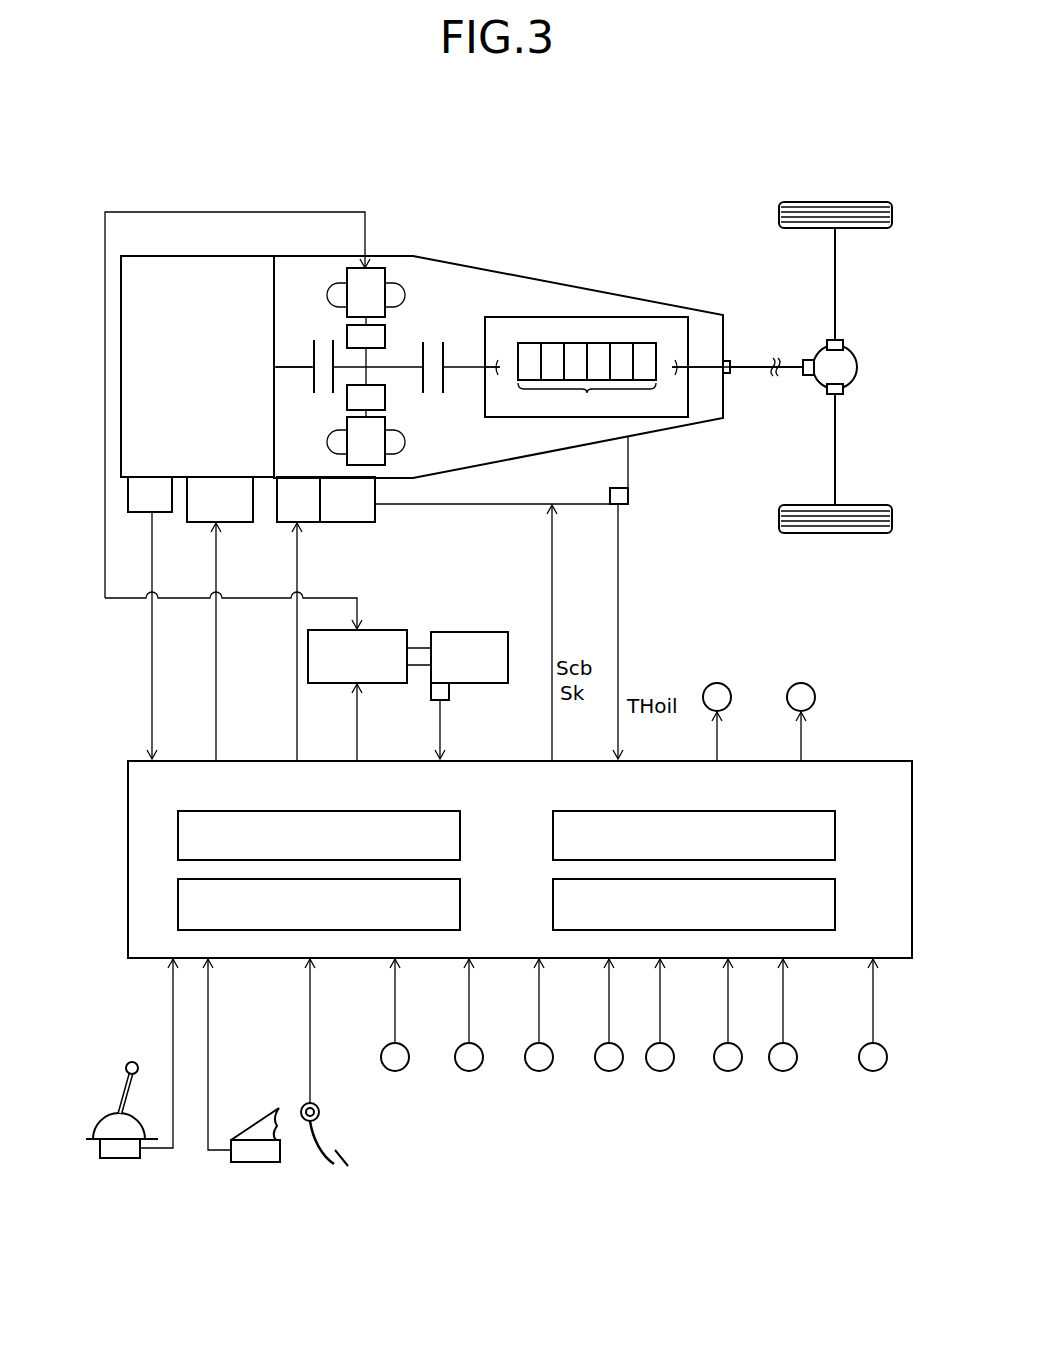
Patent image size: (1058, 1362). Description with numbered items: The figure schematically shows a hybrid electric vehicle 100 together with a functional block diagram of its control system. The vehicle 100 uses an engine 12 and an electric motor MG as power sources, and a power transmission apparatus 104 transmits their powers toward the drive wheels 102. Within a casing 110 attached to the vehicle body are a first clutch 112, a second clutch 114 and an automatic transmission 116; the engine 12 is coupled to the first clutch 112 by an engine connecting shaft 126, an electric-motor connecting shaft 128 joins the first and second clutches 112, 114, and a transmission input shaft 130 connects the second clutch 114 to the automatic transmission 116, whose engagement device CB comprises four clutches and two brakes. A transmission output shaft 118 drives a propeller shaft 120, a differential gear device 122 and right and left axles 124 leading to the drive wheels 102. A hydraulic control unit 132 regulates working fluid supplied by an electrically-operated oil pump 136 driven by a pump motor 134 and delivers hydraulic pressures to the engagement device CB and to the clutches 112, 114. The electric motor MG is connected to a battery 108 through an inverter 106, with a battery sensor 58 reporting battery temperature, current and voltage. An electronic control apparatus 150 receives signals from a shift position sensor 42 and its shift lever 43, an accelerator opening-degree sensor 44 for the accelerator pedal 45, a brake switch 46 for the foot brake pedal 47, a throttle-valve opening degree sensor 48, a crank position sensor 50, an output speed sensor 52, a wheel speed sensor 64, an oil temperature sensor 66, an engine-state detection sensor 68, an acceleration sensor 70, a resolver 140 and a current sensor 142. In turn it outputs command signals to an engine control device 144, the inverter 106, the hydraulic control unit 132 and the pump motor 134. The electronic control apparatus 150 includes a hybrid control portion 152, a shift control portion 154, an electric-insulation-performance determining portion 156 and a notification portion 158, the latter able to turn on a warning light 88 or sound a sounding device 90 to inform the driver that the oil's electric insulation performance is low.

The vehicle 100 is at (525, 148).
The power transmission apparatus 104 is at (485, 203).
The engine 12 is at (185, 262).
The casing 110 is at (385, 258).
The engine connecting shaft 126 is at (289, 366).
The electric-motor connecting shaft 128 is at (345, 365).
The first clutch 112 is at (314, 385).
The second clutch 114 is at (422, 356).
The automatic transmission 116 is at (652, 330).
The transmission input shaft 130 is at (498, 372).
The transmission output shaft 118 is at (675, 372).
The hydraulic control unit 132 is at (618, 450).
The oil temperature sensor 66 is at (628, 496).
The drive wheels 102 is at (781, 214).
The right and left axles 124 is at (835, 289).
The differential gear device 122 is at (846, 360).
The propeller shaft 120 is at (760, 378).
The engine-state detection sensor 68 is at (142, 512).
The engine control device 144 is at (246, 522).
The pump motor 134 is at (310, 522).
The electrically-operated oil pump 136 is at (362, 522).
The inverter 106 is at (367, 642).
The battery 108 is at (465, 642).
The battery sensor 58 is at (449, 690).
The warning light 88 is at (716, 690).
The sounding device 90 is at (800, 690).
The electronic control apparatus 150 is at (529, 843).
The hybrid control portion 152 is at (460, 840).
The shift control portion 154 is at (835, 840).
The electric-insulation-performance determining portion 156 is at (447, 907).
The notification portion 158 is at (825, 907).
The shift position sensor 42 is at (102, 1152).
The shift lever 43 is at (122, 1090).
The accelerator opening-degree sensor 44 is at (256, 1152).
The accelerator pedal 45 is at (246, 1128).
The brake switch 46 is at (322, 1110).
The foot brake pedal 47 is at (340, 1160).
The throttle-valve opening degree sensor 48 is at (397, 1063).
The crank position sensor 50 is at (471, 1063).
The output speed sensor 52 is at (541, 1063).
The wheel speed sensor 64 is at (611, 1063).
The acceleration sensor 70 is at (730, 1063).
The resolver 140 is at (785, 1063).
The current sensor 142 is at (875, 1063).